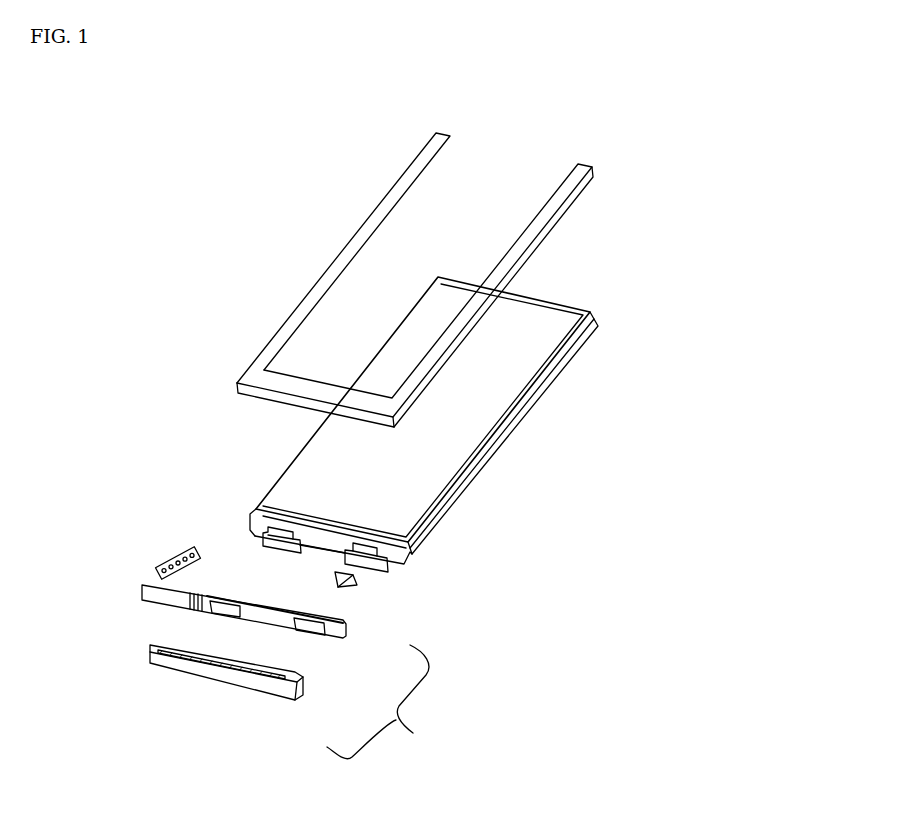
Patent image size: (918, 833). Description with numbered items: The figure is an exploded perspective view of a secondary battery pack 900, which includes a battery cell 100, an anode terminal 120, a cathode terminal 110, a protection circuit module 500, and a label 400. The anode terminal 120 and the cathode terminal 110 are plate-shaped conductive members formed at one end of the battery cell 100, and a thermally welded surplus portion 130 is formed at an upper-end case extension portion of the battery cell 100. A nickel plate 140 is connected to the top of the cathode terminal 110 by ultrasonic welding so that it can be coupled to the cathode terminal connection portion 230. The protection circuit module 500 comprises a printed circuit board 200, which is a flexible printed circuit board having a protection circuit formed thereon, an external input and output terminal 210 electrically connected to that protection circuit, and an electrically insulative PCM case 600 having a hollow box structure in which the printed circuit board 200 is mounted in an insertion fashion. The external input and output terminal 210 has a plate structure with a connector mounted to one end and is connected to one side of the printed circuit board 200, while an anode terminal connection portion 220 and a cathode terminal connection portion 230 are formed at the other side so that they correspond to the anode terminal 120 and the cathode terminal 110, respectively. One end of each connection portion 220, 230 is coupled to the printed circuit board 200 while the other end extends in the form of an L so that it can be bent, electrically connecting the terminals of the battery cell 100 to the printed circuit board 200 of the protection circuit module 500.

The secondary battery pack 900 is at (194, 152).
The label 400 is at (612, 165).
The battery cell 100 is at (435, 408).
The cathode terminal 110 is at (413, 558).
The anode terminal 120 is at (313, 545).
The thermally welded surplus portion 130 is at (283, 537).
The nickel plate 140 is at (357, 579).
The printed circuit board 200 is at (205, 628).
The external input and output terminal 210 is at (170, 549).
The anode terminal connection portion 220 is at (222, 611).
The cathode terminal connection portion 230 is at (310, 629).
The protection circuit module 500 is at (393, 702).
The PCM case 600 is at (170, 686).